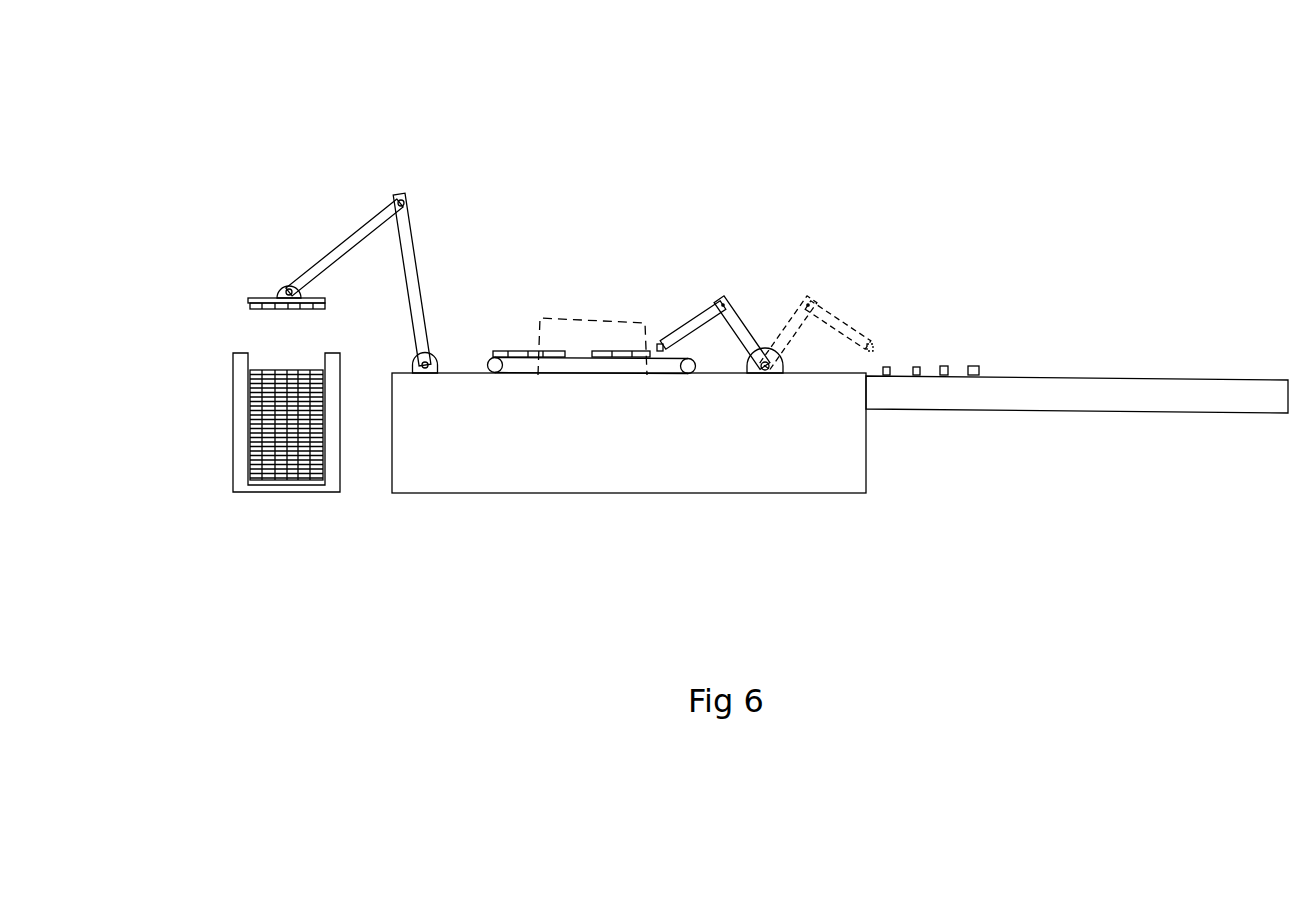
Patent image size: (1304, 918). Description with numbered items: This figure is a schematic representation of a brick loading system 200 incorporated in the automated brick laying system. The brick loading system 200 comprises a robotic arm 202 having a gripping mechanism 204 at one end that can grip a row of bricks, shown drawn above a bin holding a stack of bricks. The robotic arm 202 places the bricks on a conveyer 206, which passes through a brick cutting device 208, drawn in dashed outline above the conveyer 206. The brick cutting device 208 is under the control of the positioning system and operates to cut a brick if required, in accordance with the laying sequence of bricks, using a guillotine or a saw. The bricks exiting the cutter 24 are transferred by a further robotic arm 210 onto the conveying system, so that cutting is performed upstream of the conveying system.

The brick loading system 200 is at (719, 109).
The robotic arm 202 is at (430, 185).
The gripping mechanism 204 is at (247, 305).
The conveyer 206 is at (481, 384).
The brick cutting device 208 is at (595, 317).
The further robotic arm 210 is at (771, 288).
The cutter 24 is at (1107, 379).